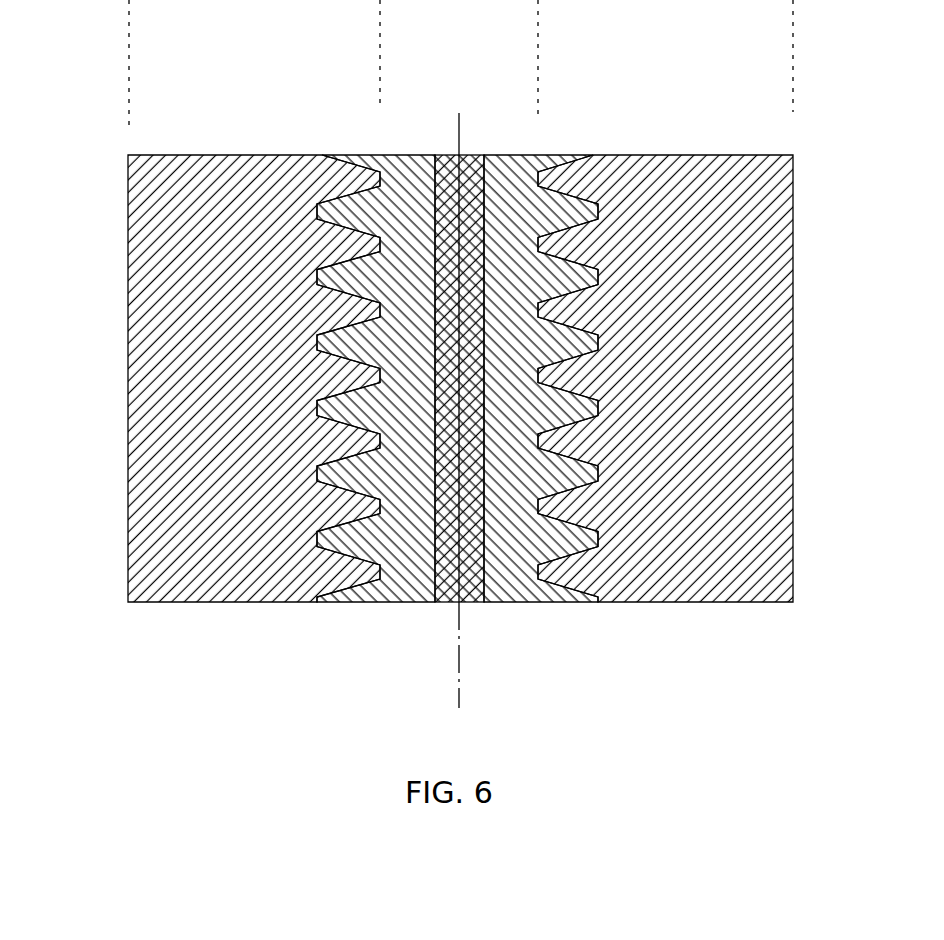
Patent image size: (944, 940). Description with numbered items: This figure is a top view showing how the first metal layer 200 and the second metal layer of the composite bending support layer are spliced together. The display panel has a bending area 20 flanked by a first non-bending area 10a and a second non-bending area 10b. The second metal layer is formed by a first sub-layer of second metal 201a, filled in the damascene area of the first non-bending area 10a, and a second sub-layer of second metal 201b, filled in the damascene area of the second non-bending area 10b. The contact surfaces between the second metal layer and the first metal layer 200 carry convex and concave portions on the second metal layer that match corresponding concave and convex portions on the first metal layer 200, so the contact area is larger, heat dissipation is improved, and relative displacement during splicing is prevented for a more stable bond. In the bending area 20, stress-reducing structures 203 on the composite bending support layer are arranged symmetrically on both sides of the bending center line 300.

The first non-bending area 10a is at (380, 43).
The second non-bending area 10b is at (793, 43).
The bending area 20 is at (538, 43).
The first sub-layer of second metal 201a is at (165, 355).
The second sub-layer of second metal 201b is at (762, 340).
The first metal layer 200 is at (370, 602).
The stress-reducing structures 203 is at (435, 602).
The bending center line 300 is at (460, 628).